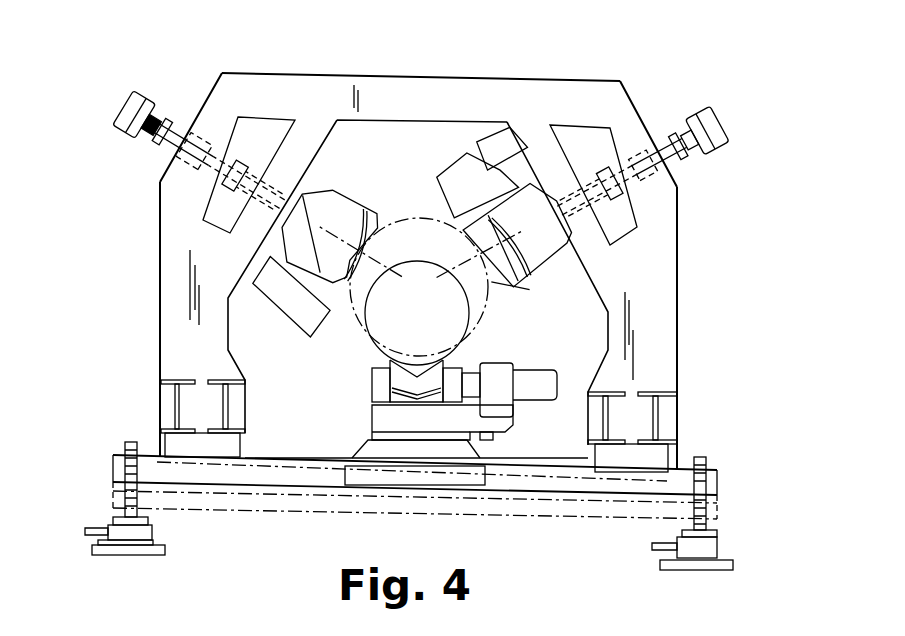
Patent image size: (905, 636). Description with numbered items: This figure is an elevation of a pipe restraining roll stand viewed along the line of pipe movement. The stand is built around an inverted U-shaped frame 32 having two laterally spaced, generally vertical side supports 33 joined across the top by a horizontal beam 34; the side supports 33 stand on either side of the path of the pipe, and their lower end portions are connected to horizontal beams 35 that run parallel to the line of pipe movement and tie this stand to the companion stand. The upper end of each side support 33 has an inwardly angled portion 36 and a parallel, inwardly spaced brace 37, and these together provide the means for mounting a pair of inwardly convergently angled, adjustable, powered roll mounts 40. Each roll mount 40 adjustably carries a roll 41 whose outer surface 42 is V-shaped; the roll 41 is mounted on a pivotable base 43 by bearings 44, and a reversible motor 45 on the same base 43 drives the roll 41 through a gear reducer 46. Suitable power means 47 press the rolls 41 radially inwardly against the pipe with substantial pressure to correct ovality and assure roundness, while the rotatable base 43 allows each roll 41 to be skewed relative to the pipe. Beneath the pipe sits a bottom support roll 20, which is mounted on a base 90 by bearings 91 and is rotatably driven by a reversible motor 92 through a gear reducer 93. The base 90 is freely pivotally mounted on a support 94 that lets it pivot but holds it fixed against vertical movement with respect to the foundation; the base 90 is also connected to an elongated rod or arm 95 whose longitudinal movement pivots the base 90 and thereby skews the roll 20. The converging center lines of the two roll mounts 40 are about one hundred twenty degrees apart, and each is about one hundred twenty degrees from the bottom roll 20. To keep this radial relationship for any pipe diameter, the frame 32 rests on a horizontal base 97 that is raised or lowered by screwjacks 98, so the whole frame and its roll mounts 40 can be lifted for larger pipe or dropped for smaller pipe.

The bottom support roll 20 is at (430, 367).
The inverted U-shaped frame 32 is at (678, 340).
The vertical side supports 33 is at (160, 323).
The horizontal beam 34 is at (452, 73).
The horizontal beams 35 is at (157, 400).
The inwardly angled portion 36 is at (213, 97).
The brace 37 is at (320, 128).
The adjustable powered roll mount 40 is at (115, 72).
The roll 41 is at (350, 223).
The V-shaped outer surface 42 is at (467, 237).
The pivotable base 43 is at (517, 197).
The bearings 44 is at (513, 283).
The reversible motor 45 is at (497, 138).
The gear reducer 46 is at (460, 172).
The power means 47 is at (235, 160).
The base 90 is at (380, 420).
The bearings 91 is at (372, 382).
The reversible motor 92 is at (533, 383).
The gear reducer 93 is at (507, 405).
The support 94 is at (443, 455).
The rod or arm 95 is at (487, 440).
The horizontal base 97 is at (290, 473).
The screwjacks 98 is at (140, 532).